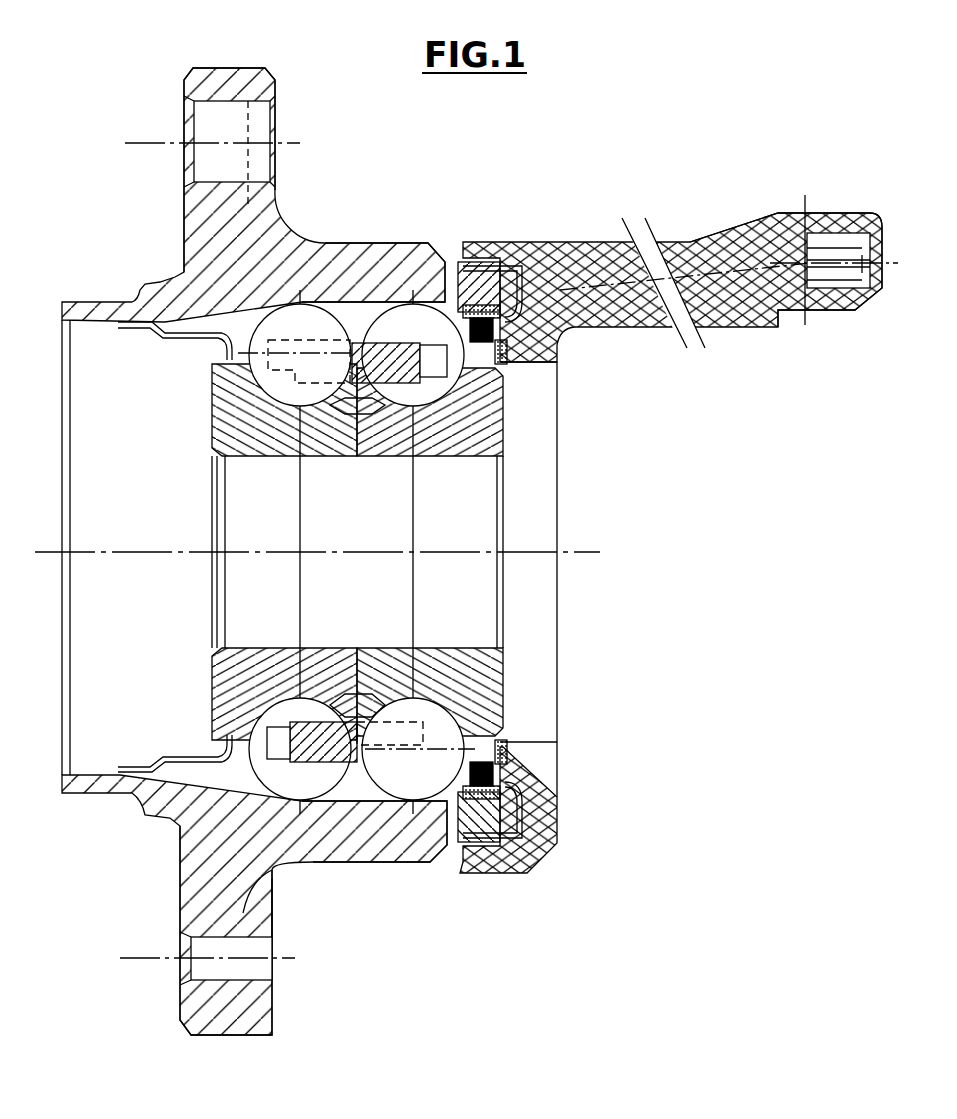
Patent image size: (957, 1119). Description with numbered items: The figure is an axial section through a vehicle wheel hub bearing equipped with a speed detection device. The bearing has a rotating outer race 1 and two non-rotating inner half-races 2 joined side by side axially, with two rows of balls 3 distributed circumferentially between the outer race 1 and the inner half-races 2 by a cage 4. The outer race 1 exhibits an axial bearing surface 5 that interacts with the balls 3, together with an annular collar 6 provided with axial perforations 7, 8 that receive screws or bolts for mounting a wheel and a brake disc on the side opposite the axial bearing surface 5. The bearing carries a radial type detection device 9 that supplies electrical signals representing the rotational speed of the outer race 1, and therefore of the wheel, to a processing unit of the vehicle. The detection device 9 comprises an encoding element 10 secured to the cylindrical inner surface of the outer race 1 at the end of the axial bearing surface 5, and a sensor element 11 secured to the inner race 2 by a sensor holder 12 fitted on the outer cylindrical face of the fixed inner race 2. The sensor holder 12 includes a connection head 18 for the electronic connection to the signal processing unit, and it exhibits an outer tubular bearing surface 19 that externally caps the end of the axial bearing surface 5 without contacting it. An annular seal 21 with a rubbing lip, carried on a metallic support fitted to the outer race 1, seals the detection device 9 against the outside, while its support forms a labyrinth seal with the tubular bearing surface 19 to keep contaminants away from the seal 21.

The rotating outer race 1 is at (328, 236).
The inner half-races 2 is at (270, 432).
The balls 3 is at (290, 392).
The cage 4 is at (390, 410).
The axial bearing surface 5 is at (388, 268).
The annular collar 6 is at (213, 83).
The axial perforation 7 is at (230, 125).
The axial perforation 8 is at (212, 975).
The detection device 9 is at (539, 360).
The encoding element 10 is at (478, 320).
The sensor element 11 is at (468, 308).
The sensor holder 12 is at (505, 364).
The connection head 18 is at (723, 245).
The outer tubular bearing surface 19 is at (475, 265).
The annular seal 21 is at (517, 300).